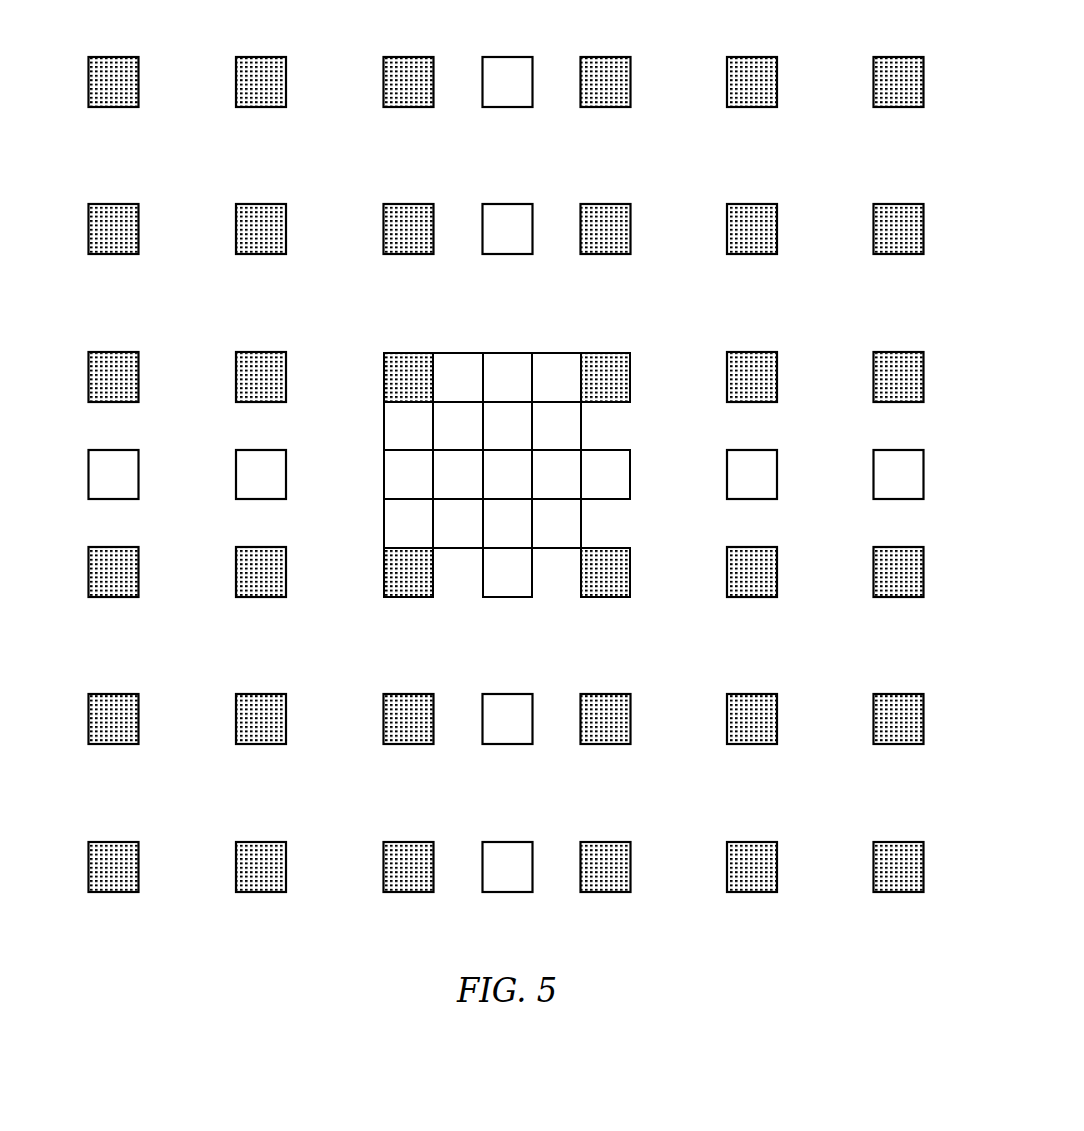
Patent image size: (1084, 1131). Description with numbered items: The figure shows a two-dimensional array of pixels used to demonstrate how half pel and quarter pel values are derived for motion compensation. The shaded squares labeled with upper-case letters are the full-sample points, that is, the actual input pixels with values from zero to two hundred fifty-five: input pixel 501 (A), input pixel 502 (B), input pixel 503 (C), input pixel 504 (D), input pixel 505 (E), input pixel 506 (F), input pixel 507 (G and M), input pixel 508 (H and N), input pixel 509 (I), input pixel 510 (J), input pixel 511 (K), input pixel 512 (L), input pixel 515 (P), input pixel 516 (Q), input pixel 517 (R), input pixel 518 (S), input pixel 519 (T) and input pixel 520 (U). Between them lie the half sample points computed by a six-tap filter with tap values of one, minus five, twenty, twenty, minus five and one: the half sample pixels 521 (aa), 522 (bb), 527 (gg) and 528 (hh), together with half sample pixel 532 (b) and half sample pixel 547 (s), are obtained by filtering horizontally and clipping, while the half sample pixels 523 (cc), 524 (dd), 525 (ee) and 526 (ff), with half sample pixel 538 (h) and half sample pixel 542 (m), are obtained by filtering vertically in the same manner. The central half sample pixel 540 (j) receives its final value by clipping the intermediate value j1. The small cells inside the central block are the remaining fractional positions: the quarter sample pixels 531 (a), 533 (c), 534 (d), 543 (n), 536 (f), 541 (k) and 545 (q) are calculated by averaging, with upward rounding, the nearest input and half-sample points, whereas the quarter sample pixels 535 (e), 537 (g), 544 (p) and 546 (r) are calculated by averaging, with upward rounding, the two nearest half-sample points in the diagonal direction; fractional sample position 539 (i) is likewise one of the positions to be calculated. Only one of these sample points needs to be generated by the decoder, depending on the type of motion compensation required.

The input pixel 501 is at (403, 57).
The input pixel 502 is at (608, 57).
The input pixel 503 is at (403, 204).
The input pixel 504 is at (608, 204).
The input pixel 505 is at (115, 352).
The input pixel 506 is at (263, 352).
The input pixel 507 is at (410, 353).
The input pixel 508 is at (605, 353).
The input pixel 509 is at (750, 352).
The input pixel 510 is at (897, 352).
The input pixel 511 is at (113, 597).
The input pixel 512 is at (261, 597).
The input pixel 515 is at (750, 597).
The input pixel 516 is at (897, 597).
The input pixel 517 is at (403, 744).
The input pixel 518 is at (608, 744).
The input pixel 519 is at (403, 892).
The input pixel 520 is at (608, 892).
The half sample pixel 521 is at (511, 57).
The half sample pixel 522 is at (511, 204).
The half sample pixel 523 is at (139, 463).
The half sample pixel 524 is at (236, 483).
The half sample pixel 525 is at (777, 483).
The half sample pixel 526 is at (874, 463).
The half sample pixel 527 is at (511, 744).
The half sample pixel 528 is at (511, 892).
The quarter sample pixel 531 is at (458, 353).
The half sample pixel 532 is at (505, 353).
The quarter sample pixel 533 is at (555, 353).
The quarter sample pixel 534 is at (384, 425).
The quarter sample pixel 535 is at (442, 412).
The quarter sample pixel 536 is at (488, 415).
The quarter sample pixel 537 is at (582, 427).
The half sample pixel 538 is at (384, 485).
The quarter sample pixel 539 is at (442, 467).
The half sample pixel 540 is at (495, 492).
The quarter sample pixel 541 is at (570, 485).
The half sample pixel 542 is at (630, 470).
The quarter sample pixel 543 is at (384, 523).
The quarter sample pixel 544 is at (442, 533).
The quarter sample pixel 545 is at (515, 542).
The quarter sample pixel 546 is at (565, 538).
The half sample pixel 547 is at (507, 597).